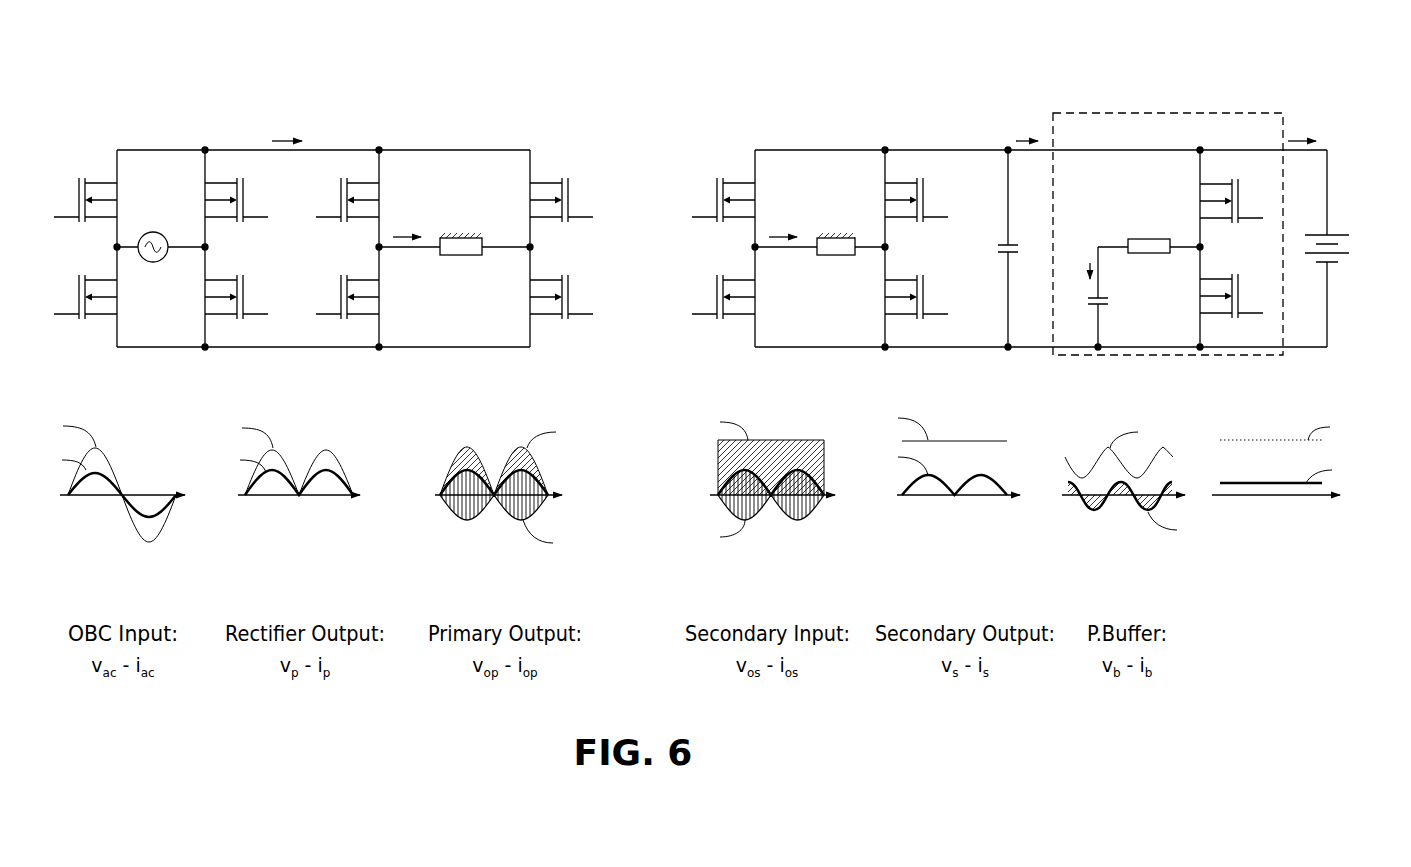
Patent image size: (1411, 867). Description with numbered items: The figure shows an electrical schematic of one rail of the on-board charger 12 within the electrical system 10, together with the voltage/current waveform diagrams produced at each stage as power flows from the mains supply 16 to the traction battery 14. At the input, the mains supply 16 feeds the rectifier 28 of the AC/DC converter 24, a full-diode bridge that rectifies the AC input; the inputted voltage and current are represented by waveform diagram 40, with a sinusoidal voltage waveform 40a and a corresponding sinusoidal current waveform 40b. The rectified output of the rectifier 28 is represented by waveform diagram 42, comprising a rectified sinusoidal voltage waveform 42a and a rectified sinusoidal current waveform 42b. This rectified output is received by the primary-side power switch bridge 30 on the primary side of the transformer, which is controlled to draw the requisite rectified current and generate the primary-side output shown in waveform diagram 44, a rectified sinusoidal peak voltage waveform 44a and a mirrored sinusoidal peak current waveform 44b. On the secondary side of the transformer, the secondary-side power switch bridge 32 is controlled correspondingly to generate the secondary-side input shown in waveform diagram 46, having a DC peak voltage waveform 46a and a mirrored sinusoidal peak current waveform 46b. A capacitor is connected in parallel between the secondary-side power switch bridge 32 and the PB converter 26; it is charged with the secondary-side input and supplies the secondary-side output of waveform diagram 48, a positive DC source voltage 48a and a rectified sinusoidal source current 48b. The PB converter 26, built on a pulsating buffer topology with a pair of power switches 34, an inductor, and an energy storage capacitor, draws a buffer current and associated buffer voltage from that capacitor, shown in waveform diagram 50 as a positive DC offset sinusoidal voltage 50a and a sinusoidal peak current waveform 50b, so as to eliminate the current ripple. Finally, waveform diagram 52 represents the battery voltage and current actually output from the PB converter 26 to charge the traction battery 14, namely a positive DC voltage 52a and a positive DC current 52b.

The electrical system 10 is at (115, 120).
The on-board charger 12 is at (817, 146).
The traction battery 14 is at (1350, 233).
The mains supply 16 is at (155, 263).
The AC/DC converter 24 is at (487, 145).
The PB converter 26 is at (1264, 140).
The rectifier 28 is at (174, 183).
The primary-side power switch bridge 30 is at (476, 186).
The secondary-side power switch bridge 32 is at (829, 186).
The pair of power switches 34 is at (1267, 258).
The voltage/current waveform diagram 40 is at (118, 540).
The sinusoidal voltage waveform 40a is at (108, 463).
The sinusoidal current waveform 40b is at (97, 483).
The voltage/current waveform diagram 42 is at (298, 540).
The rectified sinusoidal voltage waveform 42a is at (326, 448).
The rectified sinusoidal current waveform 42b is at (315, 490).
The voltage/current waveform diagram 44 is at (494, 540).
The rectified sinusoidal peak voltage waveform 44a is at (469, 447).
The mirrored sinusoidal peak current waveform 44b is at (469, 520).
The voltage/current waveform diagram 46 is at (770, 540).
The DC peak voltage waveform 46a is at (772, 440).
The mirrored sinusoidal peak current waveform 46b is at (795, 520).
The voltage/current waveform diagram 48 is at (953, 540).
The positive DC source voltage 48a is at (953, 440).
The rectified sinusoidal source current 48b is at (940, 480).
The voltage/current waveform diagram 50 is at (1123, 540).
The positive DC offset sinusoidal voltage 50a is at (1093, 462).
The sinusoidal peak current waveform 50b is at (1093, 510).
The voltage/current waveform diagram 52 is at (1278, 540).
The positive DC voltage 52a is at (1272, 440).
The positive DC current 52b is at (1272, 486).